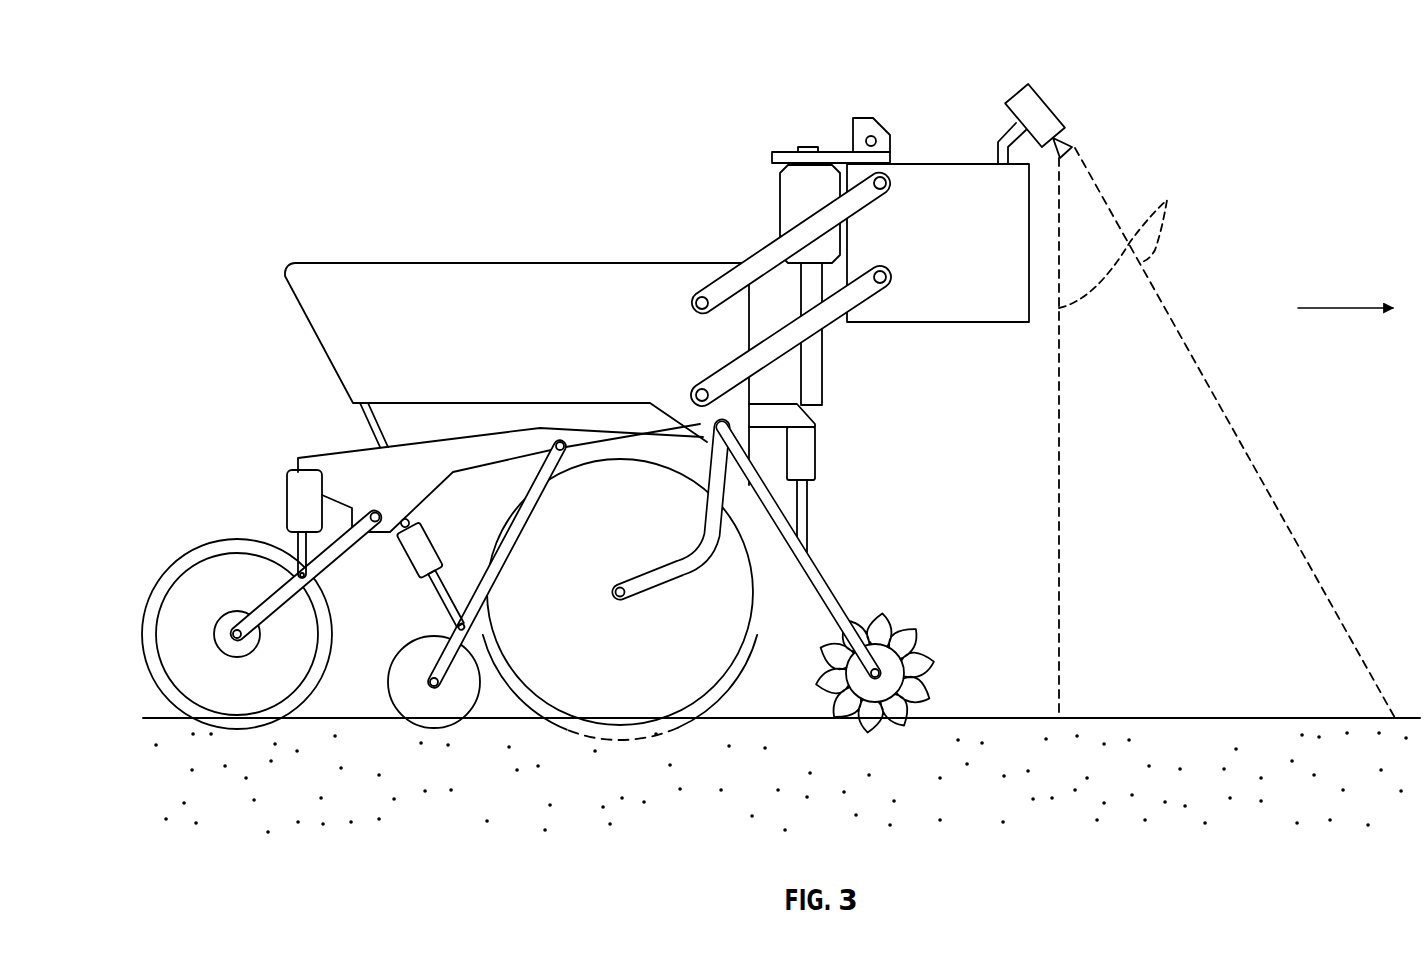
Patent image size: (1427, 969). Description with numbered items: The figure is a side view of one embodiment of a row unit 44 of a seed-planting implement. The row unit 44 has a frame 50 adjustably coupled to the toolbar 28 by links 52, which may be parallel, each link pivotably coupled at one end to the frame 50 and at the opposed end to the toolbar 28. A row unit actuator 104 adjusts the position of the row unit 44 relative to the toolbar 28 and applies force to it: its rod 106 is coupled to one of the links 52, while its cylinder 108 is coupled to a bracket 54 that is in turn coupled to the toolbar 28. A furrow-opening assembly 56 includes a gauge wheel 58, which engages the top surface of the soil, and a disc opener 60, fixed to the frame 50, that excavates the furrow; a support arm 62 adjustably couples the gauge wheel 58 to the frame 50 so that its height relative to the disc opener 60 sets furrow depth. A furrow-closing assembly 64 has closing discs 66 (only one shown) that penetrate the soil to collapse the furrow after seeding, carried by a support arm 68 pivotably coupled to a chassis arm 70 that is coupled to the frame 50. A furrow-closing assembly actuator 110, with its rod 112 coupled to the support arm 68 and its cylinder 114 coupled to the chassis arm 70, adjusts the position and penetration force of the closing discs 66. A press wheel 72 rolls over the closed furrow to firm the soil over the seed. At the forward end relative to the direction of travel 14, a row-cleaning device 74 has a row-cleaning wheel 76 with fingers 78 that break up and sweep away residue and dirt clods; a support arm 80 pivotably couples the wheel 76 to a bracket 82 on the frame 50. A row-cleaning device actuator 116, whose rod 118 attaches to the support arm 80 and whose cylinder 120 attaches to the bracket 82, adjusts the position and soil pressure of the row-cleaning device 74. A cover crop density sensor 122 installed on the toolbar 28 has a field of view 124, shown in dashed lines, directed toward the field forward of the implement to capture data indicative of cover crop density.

The direction of travel 14 is at (1353, 308).
The toolbar 28 is at (920, 323).
The row unit 44 is at (310, 183).
The frame 50 is at (522, 262).
The links 52 is at (792, 289).
The bracket 54 is at (789, 150).
The furrow-opening assembly 56 is at (644, 617).
The gauge wheel 58 is at (753, 565).
The disc opener 60 is at (560, 731).
The support arm 62 is at (660, 587).
The furrow-closing assembly 64 is at (447, 637).
The closing discs 66 is at (388, 695).
The support arm 68 is at (538, 478).
The chassis arm 70 is at (330, 452).
The press wheel 72 is at (143, 646).
The row-cleaning device 74 is at (905, 629).
The row-cleaning wheel 76 is at (910, 628).
The fingers 78 is at (922, 640).
The support arm 80 is at (826, 592).
The bracket 82 is at (788, 407).
The row unit actuator 104 is at (750, 303).
The rod 106 is at (800, 290).
The cylinder 108 is at (775, 187).
The furrow-closing assembly actuator 110 is at (412, 574).
The rod 112 is at (460, 578).
The cylinder 114 is at (410, 556).
The row-cleaning device actuator 116 is at (855, 483).
The rod 118 is at (808, 525).
The cylinder 120 is at (815, 453).
The cover crop density sensor 122 is at (1048, 103).
The field of view 124 is at (1172, 200).